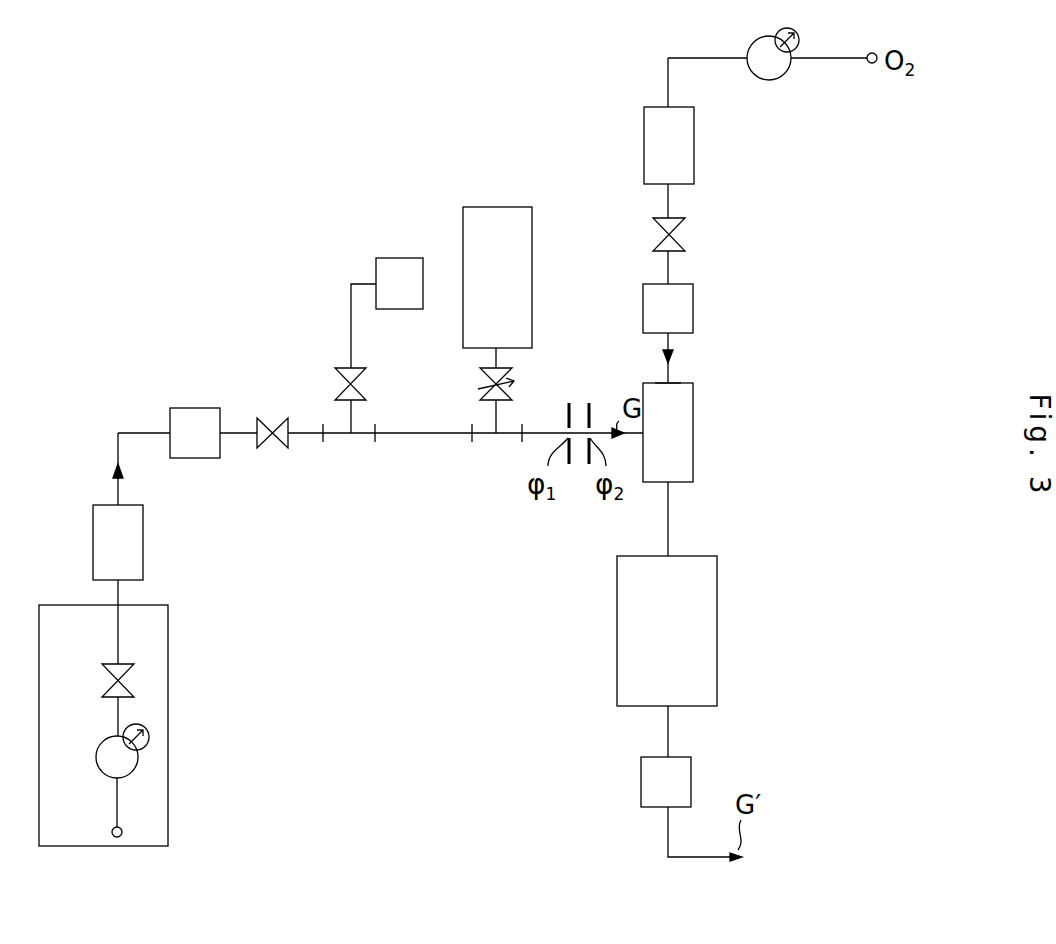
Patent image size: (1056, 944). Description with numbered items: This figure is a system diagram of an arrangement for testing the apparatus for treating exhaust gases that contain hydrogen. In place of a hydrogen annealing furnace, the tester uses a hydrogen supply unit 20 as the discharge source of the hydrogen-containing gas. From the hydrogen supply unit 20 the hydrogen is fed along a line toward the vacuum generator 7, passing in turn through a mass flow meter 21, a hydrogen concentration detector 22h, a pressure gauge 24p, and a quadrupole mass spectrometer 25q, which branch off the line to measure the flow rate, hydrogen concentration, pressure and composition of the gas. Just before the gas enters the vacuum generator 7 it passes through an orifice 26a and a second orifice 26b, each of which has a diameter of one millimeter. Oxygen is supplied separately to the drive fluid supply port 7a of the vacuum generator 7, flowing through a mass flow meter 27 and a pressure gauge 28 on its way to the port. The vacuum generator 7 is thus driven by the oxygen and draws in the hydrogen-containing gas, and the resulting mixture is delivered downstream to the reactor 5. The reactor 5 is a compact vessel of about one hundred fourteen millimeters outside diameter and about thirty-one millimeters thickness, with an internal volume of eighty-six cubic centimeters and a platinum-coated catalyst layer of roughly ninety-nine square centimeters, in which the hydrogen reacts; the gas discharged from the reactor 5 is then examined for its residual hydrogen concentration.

The reactor 5 is at (717, 632).
The vacuum generator 7 is at (693, 443).
The drive fluid supply port 7a is at (670, 383).
The hydrogen supply unit 20 is at (168, 700).
The mass flow meter 21 is at (143, 538).
The hydrogen concentration detector 22h is at (200, 408).
The pressure gauge 24p is at (410, 258).
The quadrupole mass spectrometer 25q is at (532, 272).
The orifice 26a is at (566, 410).
The orifice 26b is at (592, 410).
The mass flow meter 27 is at (694, 146).
The pressure gauge 28 is at (693, 302).